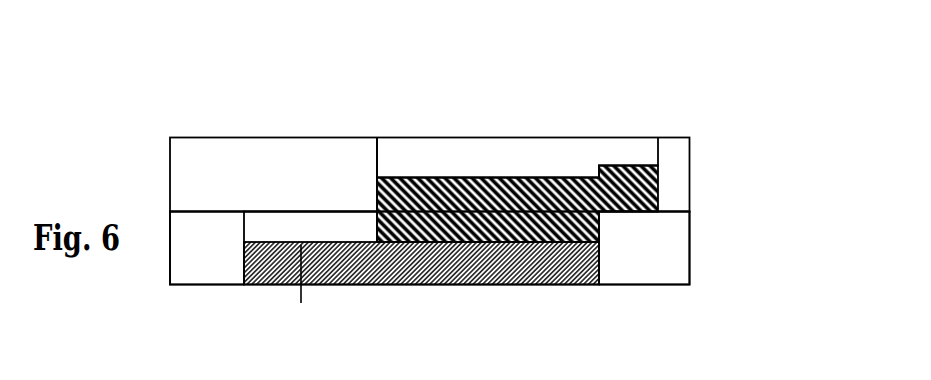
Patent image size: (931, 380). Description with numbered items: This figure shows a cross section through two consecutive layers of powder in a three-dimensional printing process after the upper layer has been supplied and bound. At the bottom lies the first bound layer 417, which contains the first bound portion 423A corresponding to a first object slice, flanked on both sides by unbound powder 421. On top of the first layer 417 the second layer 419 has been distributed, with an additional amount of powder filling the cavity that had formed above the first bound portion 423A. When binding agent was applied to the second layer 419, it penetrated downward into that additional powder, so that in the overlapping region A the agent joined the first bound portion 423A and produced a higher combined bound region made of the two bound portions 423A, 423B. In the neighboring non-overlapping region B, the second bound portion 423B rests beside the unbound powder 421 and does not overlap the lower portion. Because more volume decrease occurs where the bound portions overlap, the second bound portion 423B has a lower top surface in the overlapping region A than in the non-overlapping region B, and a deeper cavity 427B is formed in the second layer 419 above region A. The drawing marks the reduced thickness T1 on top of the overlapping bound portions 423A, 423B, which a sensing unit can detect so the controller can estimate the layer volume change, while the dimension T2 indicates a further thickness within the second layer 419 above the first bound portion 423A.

The first bound layer 417 is at (712, 268).
The second layer 419 is at (712, 181).
The unbound powder 421 is at (225, 275).
The first bound portion 423A is at (477, 270).
The second bound portion 423B is at (418, 183).
The cavity 427B is at (498, 158).
The overlapping region A is at (527, 187).
The non-overlapping region B is at (648, 192).
The reduced thickness T1 is at (348, 137).
The thickness T2 is at (377, 178).